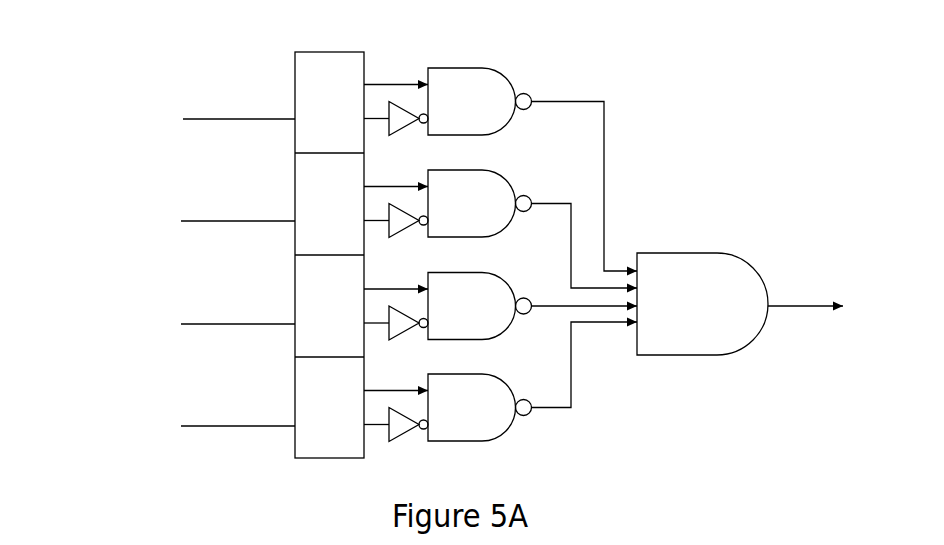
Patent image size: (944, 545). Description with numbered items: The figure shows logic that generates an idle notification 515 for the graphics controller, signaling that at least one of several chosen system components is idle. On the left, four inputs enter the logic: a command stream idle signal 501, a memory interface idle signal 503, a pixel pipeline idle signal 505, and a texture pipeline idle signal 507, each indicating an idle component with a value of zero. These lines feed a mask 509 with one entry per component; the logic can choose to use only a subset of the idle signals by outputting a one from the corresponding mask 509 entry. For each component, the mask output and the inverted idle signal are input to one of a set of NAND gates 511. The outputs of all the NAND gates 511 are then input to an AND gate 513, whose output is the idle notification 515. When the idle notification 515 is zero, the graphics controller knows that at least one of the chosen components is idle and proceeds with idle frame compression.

The command stream (CS) idle signal 501 is at (108, 101).
The memory interface (MI) idle signal 503 is at (102, 205).
The pixel pipeline (Pix) idle signal 505 is at (102, 307).
The text pipeline (Tex) idle signal 507 is at (102, 409).
The mask 509 is at (305, 48).
The NAND gates 511 is at (503, 41).
The AND gate 513 is at (675, 253).
The idle notification 515 is at (795, 303).